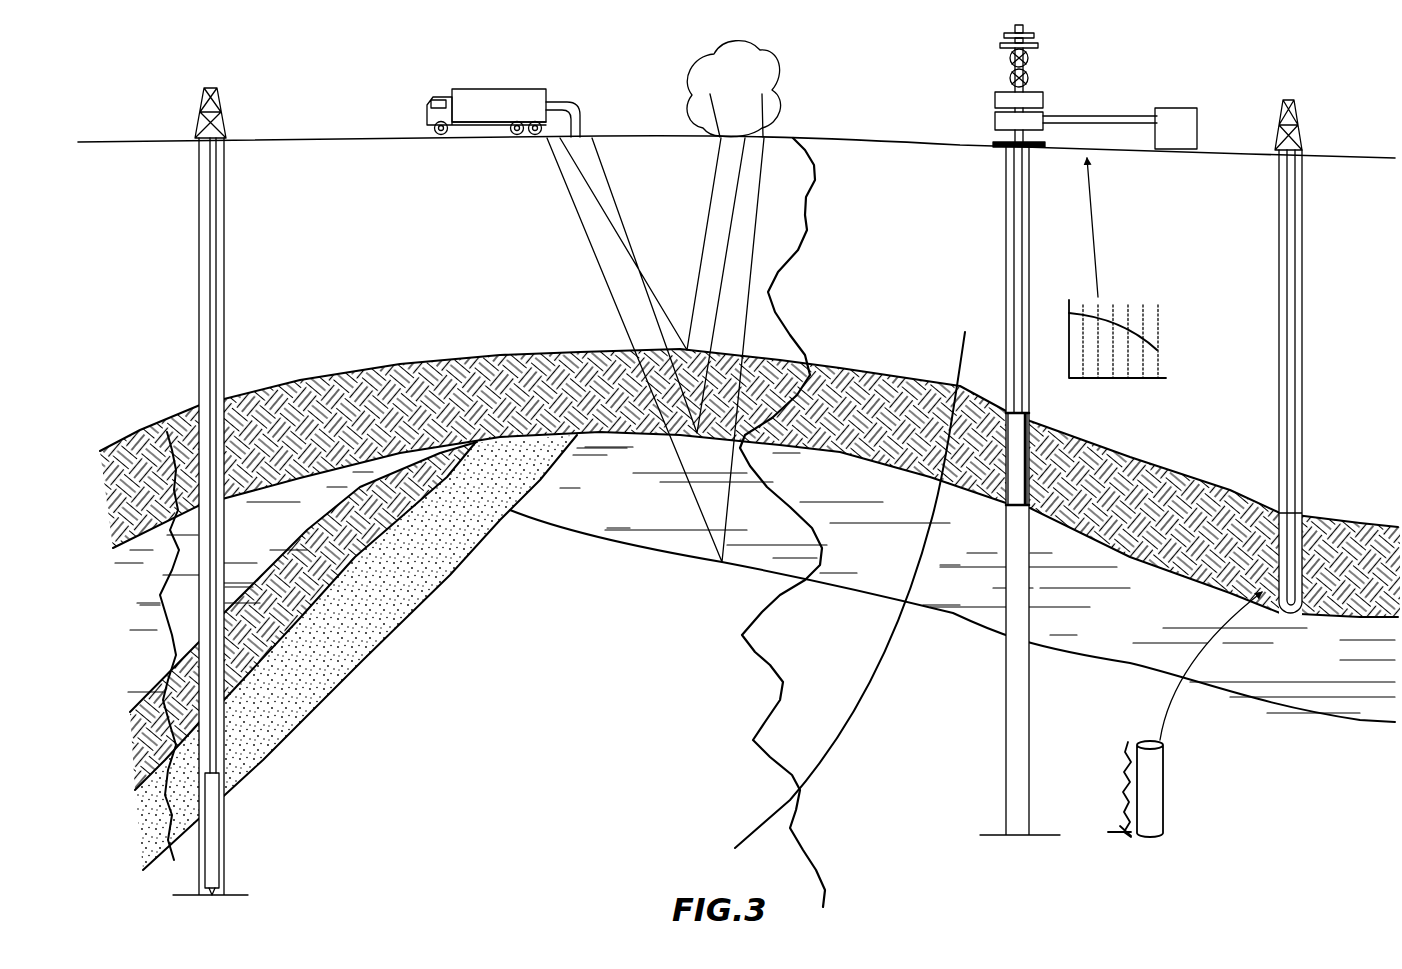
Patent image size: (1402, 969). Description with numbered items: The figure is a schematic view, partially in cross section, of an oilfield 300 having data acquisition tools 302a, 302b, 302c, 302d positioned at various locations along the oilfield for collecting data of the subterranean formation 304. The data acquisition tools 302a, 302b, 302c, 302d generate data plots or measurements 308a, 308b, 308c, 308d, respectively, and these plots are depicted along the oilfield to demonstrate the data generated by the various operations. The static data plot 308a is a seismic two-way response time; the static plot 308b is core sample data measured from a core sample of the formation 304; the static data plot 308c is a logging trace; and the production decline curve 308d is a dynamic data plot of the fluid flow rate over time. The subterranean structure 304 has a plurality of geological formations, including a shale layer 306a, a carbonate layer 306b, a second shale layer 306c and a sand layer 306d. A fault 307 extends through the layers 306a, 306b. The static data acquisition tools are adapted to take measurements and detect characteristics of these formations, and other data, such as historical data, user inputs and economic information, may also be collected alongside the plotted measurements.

The oilfield 300 is at (1228, 93).
The data acquisition tool 302a is at (458, 88).
The data acquisition tool 302b is at (1297, 551).
The data acquisition tool 302c is at (222, 836).
The data acquisition tool 302d is at (1030, 499).
The subterranean formation 304 is at (952, 616).
The shale layer 306a is at (750, 485).
The carbonate layer 306b is at (755, 580).
The shale layer 306c is at (305, 615).
The sand layer 306d is at (360, 655).
The fault 307 is at (960, 352).
The static data plot 308a is at (780, 697).
The static plot 308b is at (1126, 756).
The static data plot 308c is at (156, 641).
The production decline curve 308d is at (1120, 380).